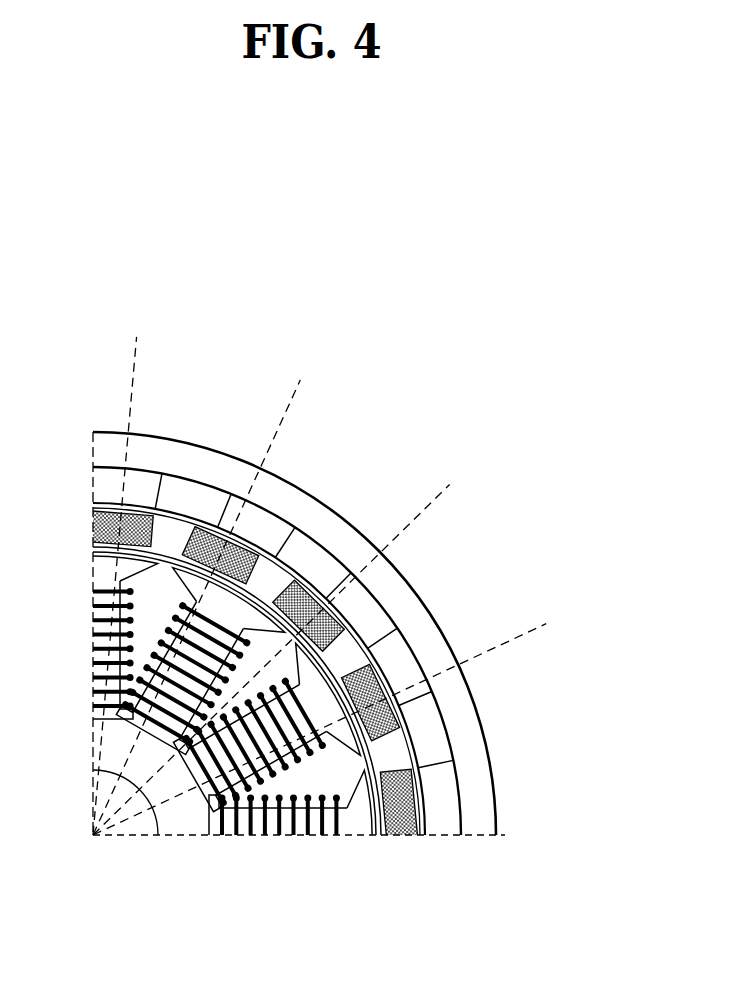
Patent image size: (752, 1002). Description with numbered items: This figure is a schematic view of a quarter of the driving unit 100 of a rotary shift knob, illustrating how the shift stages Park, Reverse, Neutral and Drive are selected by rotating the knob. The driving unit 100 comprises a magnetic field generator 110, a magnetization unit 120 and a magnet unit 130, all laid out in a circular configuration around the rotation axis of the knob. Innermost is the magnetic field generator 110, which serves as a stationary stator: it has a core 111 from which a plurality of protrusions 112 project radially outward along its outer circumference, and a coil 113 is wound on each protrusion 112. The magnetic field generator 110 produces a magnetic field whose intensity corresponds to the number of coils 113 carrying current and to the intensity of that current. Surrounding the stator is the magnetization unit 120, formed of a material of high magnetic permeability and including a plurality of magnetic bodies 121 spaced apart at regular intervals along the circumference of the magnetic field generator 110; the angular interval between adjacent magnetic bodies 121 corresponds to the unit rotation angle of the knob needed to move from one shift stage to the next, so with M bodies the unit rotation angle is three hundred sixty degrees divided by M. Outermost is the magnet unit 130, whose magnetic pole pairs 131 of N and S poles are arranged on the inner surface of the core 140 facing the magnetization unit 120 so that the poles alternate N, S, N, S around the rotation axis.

The driving unit 100 is at (326, 323).
The magnetic field generator 110 is at (195, 884).
The core 111 is at (198, 822).
The protrusion 112 is at (358, 822).
The coil 113 is at (272, 822).
The magnetization unit 120 is at (355, 653).
The magnetic body 121 is at (318, 595).
The magnet unit 130 is at (149, 455).
The magnetic pole pair 131 is at (319, 540).
The core 140 is at (218, 465).